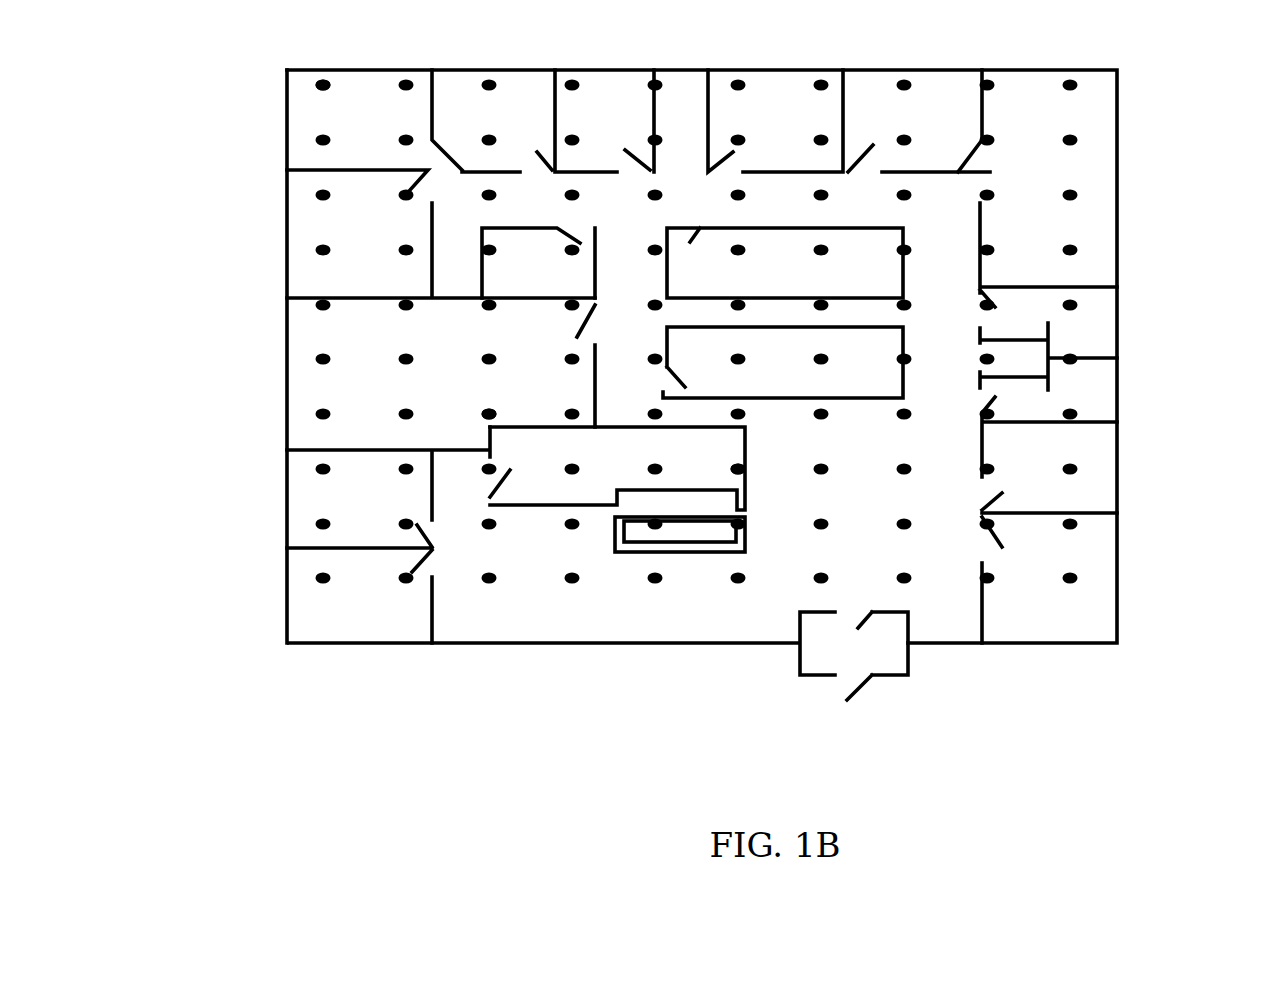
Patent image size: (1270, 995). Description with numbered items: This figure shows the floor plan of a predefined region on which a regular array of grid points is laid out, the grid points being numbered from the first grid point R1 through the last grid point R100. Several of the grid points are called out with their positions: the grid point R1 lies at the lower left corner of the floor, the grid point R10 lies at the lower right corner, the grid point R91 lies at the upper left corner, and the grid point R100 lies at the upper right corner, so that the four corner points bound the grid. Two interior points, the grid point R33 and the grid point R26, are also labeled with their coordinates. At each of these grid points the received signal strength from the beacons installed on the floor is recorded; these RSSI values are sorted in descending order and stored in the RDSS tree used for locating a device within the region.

The grid point R91 is at (323, 85).
The grid point R100 is at (1070, 85).
The grid point R1 is at (323, 578).
The grid point R10 is at (1070, 578).
The grid point R33 is at (489, 414).
The grid point R26 is at (738, 469).